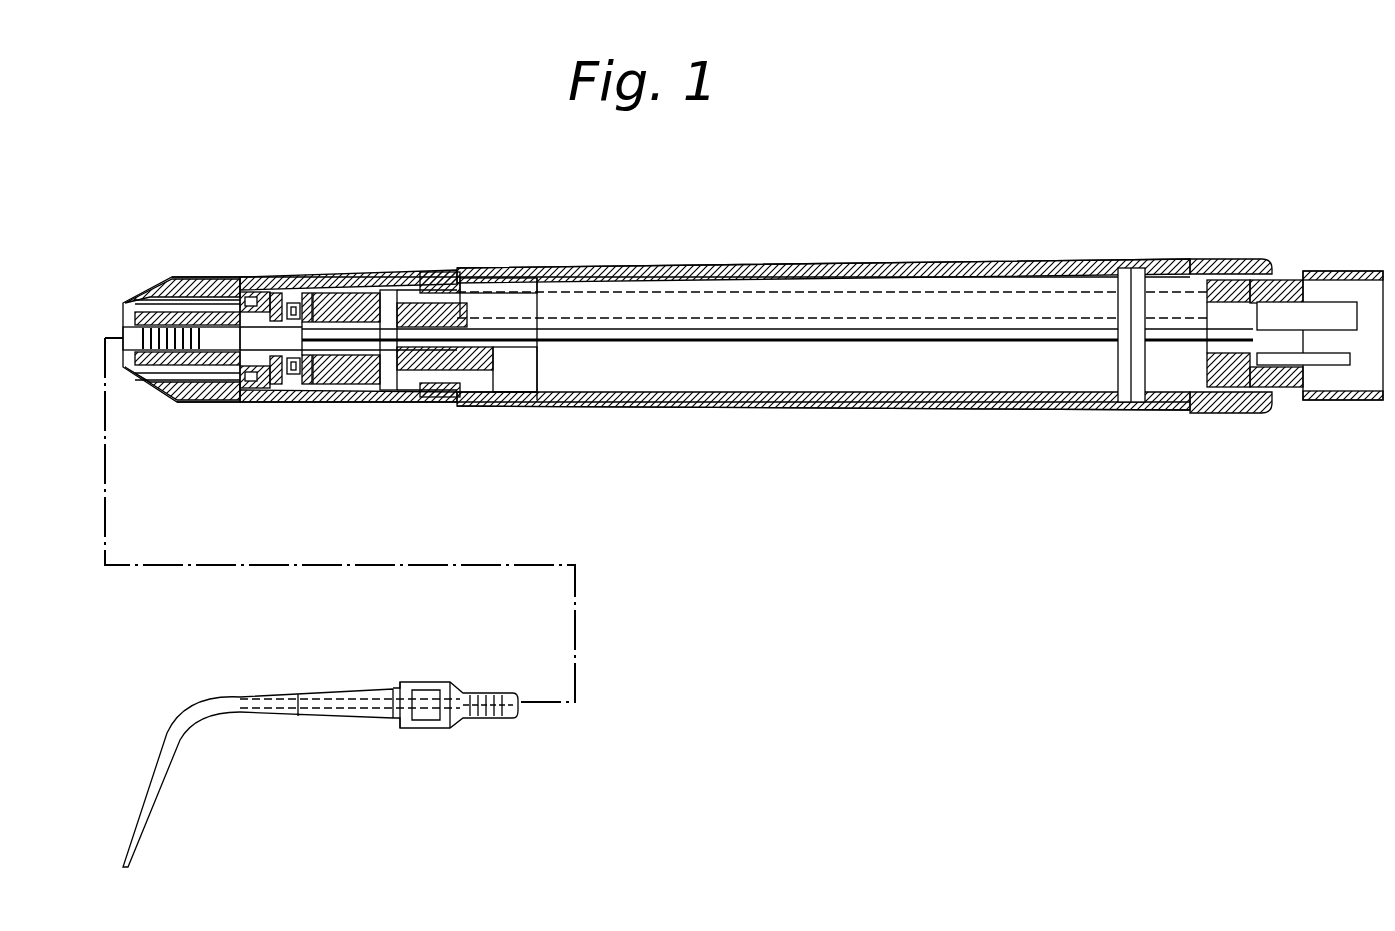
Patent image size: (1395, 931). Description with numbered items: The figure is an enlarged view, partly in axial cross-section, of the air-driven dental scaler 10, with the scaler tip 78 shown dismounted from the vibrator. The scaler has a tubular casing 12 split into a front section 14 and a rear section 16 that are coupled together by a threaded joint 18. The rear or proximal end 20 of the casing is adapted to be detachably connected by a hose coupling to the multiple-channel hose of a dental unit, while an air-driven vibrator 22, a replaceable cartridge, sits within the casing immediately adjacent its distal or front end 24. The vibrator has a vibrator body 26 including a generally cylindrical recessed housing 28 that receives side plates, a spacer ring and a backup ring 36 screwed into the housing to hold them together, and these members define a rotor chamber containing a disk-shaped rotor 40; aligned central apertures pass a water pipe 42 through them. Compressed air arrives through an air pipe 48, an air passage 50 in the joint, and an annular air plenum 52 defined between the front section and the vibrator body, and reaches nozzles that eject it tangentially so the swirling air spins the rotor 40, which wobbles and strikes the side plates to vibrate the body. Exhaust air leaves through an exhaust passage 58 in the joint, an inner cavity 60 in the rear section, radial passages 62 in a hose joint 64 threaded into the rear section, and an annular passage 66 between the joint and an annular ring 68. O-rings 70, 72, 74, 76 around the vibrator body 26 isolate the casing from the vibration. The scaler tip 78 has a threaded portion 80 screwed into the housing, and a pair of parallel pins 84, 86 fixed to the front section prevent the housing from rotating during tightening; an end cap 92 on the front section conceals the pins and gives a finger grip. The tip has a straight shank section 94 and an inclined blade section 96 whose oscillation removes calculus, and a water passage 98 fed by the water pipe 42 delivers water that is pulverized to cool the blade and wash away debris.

The dental scaler 10 is at (815, 188).
The tubular casing 12 is at (638, 250).
The front section 14 is at (388, 272).
The rear section 16 is at (930, 262).
The threaded joint 18 is at (500, 352).
The rear or proximal end 20 is at (1347, 252).
The air-driven vibrator 22 is at (307, 275).
The distal or front end 24 is at (186, 266).
The vibrator body 26 is at (284, 405).
The recessed housing 28 is at (268, 278).
The backup ring 36 is at (369, 400).
The rotor 40 is at (311, 400).
The water pipe 42 is at (938, 345).
The air pipe 48 is at (1046, 290).
The air passage 50 is at (437, 273).
The annular air plenum 52 is at (364, 270).
The exhaust passage 58 is at (489, 397).
The inner cavity 60 is at (758, 381).
The radial passages 62 is at (1218, 405).
The hose joint 64 is at (1192, 266).
The annular passage 66 is at (1242, 263).
The annular ring 68 is at (1246, 415).
The O-ring 70 is at (239, 275).
The O-ring 72 is at (253, 277).
The O-ring 74 is at (341, 400).
The O-ring 76 is at (381, 405).
The scaler tip 78 is at (364, 668).
The threaded portion 80 is at (490, 718).
The pin 84 is at (211, 398).
The pin 86 is at (208, 277).
The end cap 92 is at (133, 278).
The straight shank section 94 is at (310, 718).
The inclined blade section 96 is at (170, 780).
The water passage 98 is at (383, 718).